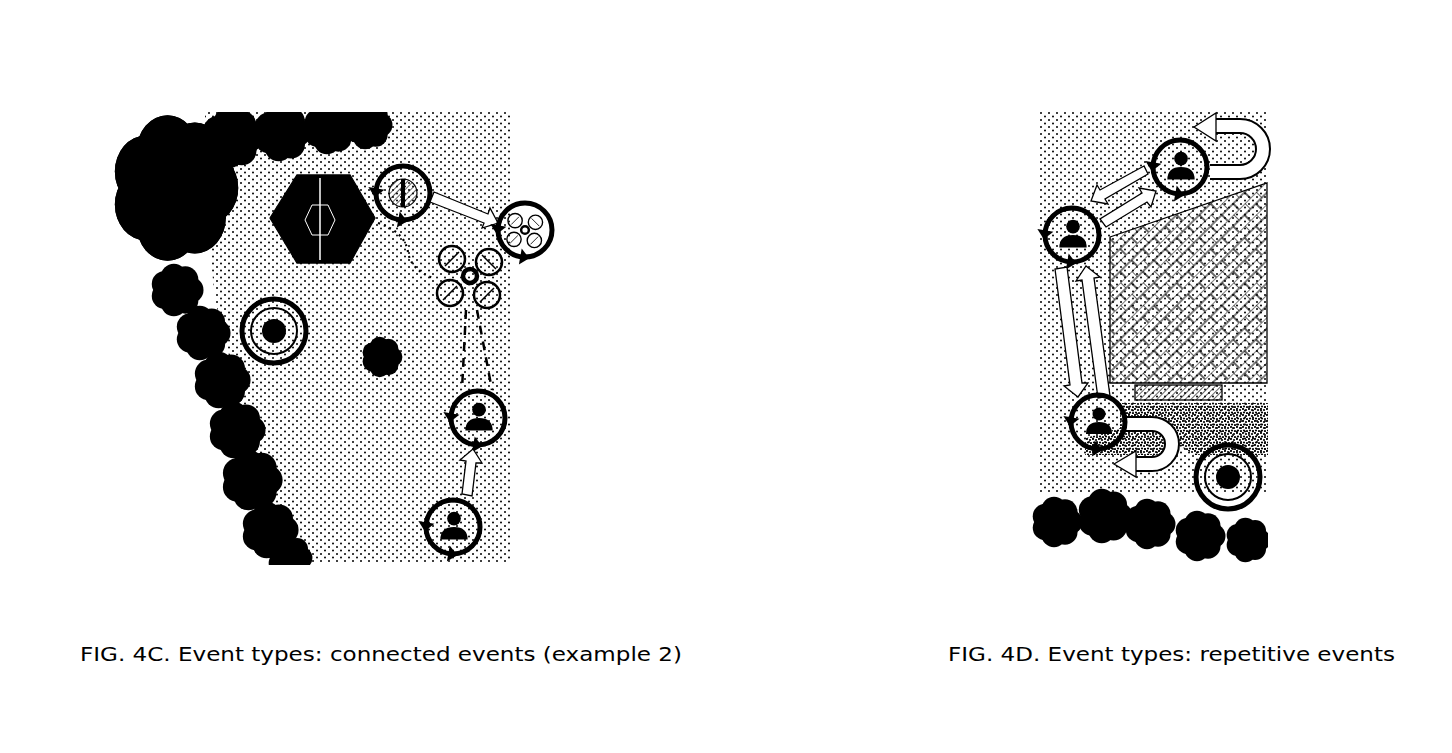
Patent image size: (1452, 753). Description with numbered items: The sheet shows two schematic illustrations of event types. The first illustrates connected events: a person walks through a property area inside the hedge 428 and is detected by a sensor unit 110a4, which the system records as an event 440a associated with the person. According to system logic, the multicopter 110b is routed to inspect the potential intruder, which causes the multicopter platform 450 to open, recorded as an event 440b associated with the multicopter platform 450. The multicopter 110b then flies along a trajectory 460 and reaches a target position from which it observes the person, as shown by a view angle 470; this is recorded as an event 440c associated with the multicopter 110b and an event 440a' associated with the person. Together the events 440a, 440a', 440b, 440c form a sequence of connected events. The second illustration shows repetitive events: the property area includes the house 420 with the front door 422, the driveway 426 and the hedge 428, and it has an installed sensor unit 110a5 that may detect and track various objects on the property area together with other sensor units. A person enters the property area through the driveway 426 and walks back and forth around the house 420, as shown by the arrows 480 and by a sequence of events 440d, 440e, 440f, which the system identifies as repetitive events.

In FIG. 4C, the sensor unit 110a4 is at (276, 364).
In FIG. 4D, the sensor unit 110a5 is at (1263, 485).
In FIG. 4C, the multicopter 110b is at (490, 278).
In FIG. 4D, the house 420 is at (1267, 308).
In FIG. 4D, the front door 422 is at (1250, 392).
In FIG. 4D, the driveway 426 is at (1268, 438).
In FIG. 4C, the hedge 428 is at (175, 333).
In FIG. 4D, the hedge 428 is at (1042, 522).
In FIG. 4C, the event 440a is at (536, 538).
In FIG. 4C, the event 440a' is at (567, 432).
In FIG. 4C, the event 440b is at (432, 185).
In FIG. 4C, the event 440c is at (552, 215).
In FIG. 4D, the event 440d is at (1160, 150).
In FIG. 4D, the event 440e is at (1050, 216).
In FIG. 4D, the event 440f is at (1072, 423).
In FIG. 4C, the multicopter platform 450 is at (366, 192).
In FIG. 4C, the trajectory 460 is at (407, 258).
In FIG. 4C, the view angle 470 is at (493, 362).
In FIG. 4D, the arrows 480 is at (1063, 355).